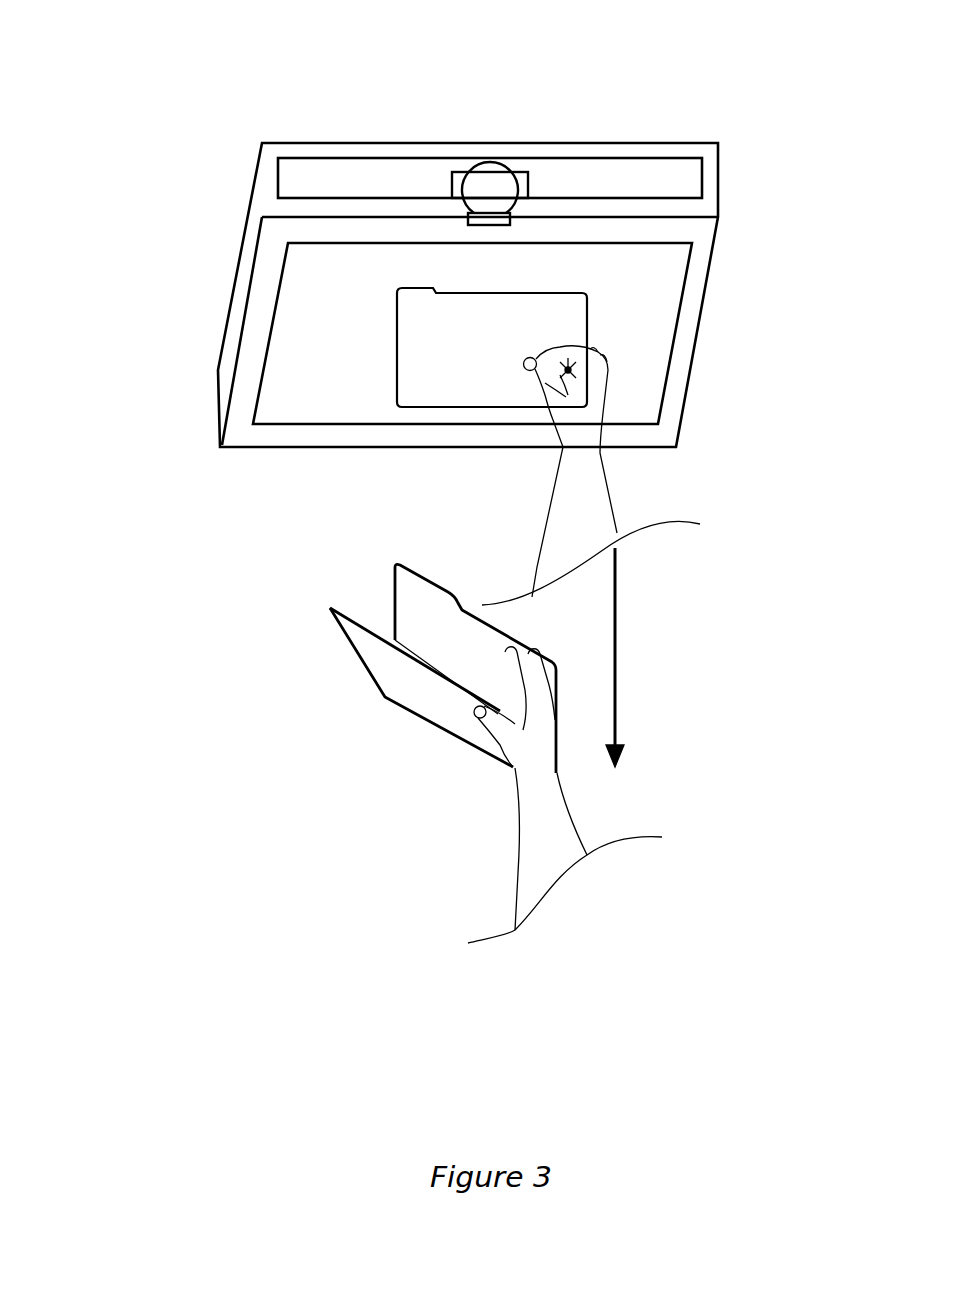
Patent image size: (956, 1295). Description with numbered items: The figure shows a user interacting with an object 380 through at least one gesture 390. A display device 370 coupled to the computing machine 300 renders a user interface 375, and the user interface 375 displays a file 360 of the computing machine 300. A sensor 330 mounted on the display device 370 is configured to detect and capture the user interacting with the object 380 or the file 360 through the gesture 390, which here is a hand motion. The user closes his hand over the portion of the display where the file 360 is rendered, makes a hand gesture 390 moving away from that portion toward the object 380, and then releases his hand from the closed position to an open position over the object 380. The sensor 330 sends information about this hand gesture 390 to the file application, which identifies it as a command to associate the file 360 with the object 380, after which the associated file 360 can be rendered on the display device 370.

The computing machine 300 is at (272, 79).
The sensor 330 is at (490, 163).
The file 360 is at (512, 370).
The display device 370 is at (710, 98).
The user interface 375 is at (662, 359).
The object 380 is at (357, 588).
The gesture 390 is at (720, 672).